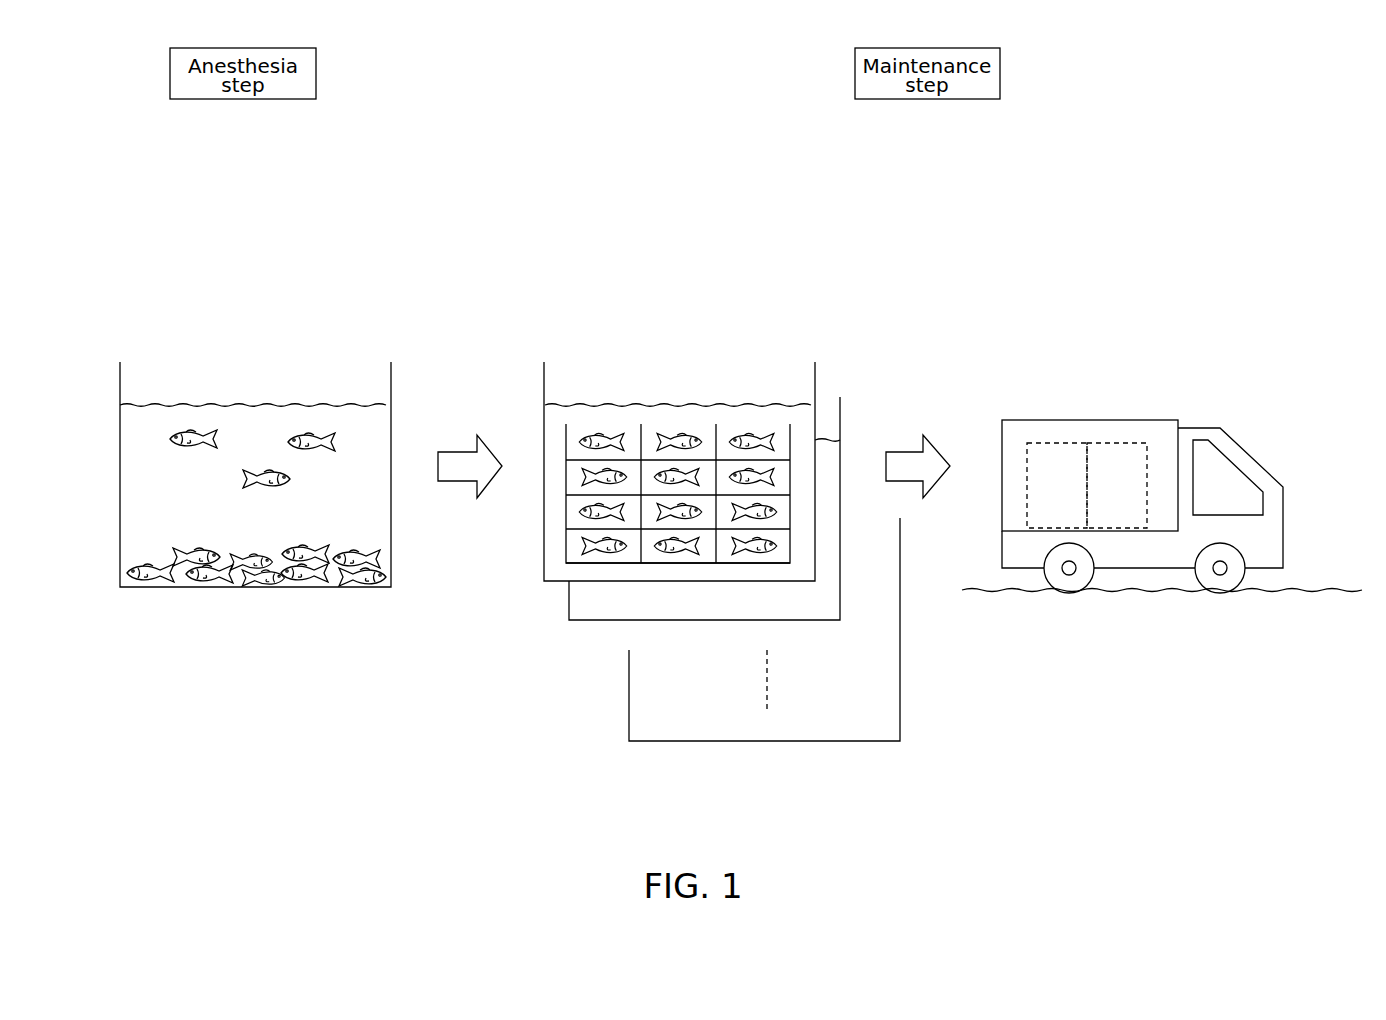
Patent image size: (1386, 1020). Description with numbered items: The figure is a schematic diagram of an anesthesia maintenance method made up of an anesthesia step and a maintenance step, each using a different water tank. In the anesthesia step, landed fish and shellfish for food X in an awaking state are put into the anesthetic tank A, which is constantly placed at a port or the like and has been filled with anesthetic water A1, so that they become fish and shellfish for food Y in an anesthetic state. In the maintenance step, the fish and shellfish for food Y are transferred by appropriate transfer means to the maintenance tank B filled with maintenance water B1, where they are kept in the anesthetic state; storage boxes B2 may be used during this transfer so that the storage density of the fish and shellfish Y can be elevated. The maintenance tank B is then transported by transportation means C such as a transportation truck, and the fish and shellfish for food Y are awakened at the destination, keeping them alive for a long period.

The anesthetic tank A is at (250, 345).
The anesthetic water A1 is at (323, 412).
The fish and shellfish for food in an awaking state X is at (198, 424).
The fish and shellfish for food in an anesthetic state Y is at (157, 588).
The maintenance tank B is at (663, 345).
The maintenance water B1 is at (743, 412).
The storage boxes B2 is at (683, 567).
The transportation means C is at (1207, 370).